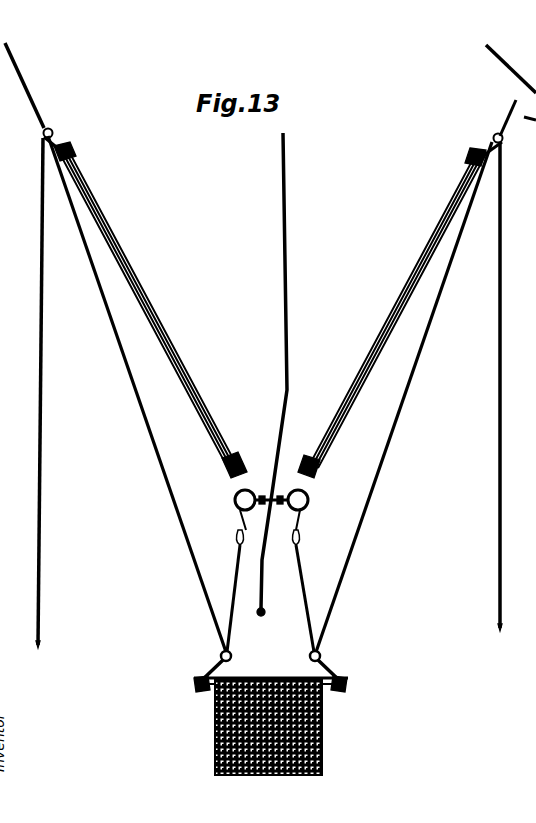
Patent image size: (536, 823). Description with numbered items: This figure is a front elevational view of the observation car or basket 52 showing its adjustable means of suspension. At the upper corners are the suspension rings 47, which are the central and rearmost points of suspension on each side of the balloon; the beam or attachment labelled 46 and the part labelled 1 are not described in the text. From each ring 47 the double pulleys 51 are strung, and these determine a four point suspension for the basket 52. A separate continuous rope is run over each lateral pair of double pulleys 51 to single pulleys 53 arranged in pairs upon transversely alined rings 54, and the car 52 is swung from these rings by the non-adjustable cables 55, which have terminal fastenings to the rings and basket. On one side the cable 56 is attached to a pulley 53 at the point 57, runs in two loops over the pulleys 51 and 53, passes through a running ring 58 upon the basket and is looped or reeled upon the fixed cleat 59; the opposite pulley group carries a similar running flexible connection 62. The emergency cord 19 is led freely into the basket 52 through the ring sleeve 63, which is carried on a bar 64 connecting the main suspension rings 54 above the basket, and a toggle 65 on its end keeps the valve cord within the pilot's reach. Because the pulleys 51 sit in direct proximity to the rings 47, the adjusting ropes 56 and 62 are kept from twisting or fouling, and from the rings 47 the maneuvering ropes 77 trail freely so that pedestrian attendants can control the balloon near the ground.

The clamp 1 is at (470, 158).
The emergency cord 19 is at (288, 222).
The beam 46 is at (21, 62).
The suspension ring 47 is at (50, 129).
The double pulley 51 is at (74, 151).
The basket 52 is at (324, 722).
The single pulley 53 is at (228, 476).
The ring 54 is at (234, 505).
The non-adjustable cable 55 is at (237, 573).
The cable 56 is at (141, 424).
The point 57 is at (230, 458).
The running ring 58 is at (308, 657).
The fixed cleat 59 is at (198, 680).
The running flexible connection 62 is at (404, 410).
The ring sleeve 63 is at (280, 495).
The bar 64 is at (260, 495).
The toggle 65 is at (266, 614).
The maneuvering rope 77 is at (36, 420).